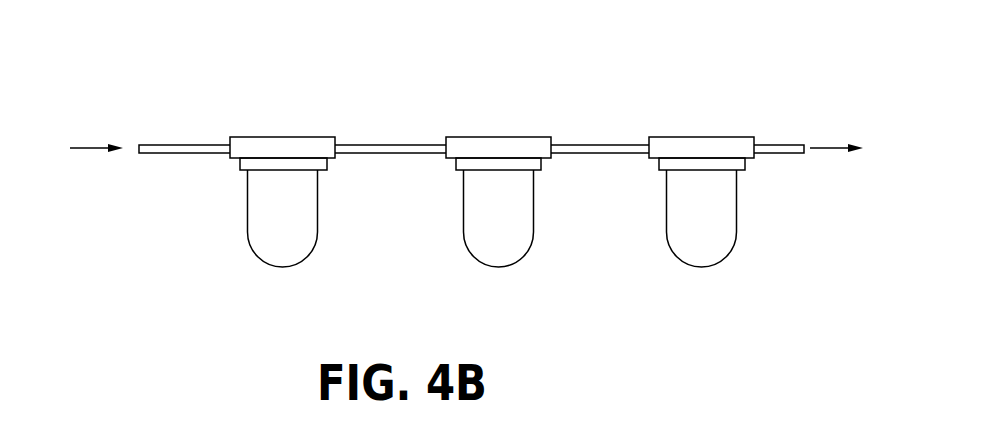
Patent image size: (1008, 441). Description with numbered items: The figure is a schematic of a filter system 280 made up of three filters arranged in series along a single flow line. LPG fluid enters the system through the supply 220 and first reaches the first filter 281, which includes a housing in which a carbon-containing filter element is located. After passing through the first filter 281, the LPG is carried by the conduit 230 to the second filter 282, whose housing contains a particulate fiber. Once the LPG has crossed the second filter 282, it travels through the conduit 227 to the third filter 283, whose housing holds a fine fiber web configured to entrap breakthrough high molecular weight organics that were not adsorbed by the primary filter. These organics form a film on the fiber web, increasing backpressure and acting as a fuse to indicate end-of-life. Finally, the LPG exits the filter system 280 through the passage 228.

The filter system 280 is at (539, 82).
The supply 220 is at (168, 153).
The conduit 230 is at (406, 153).
The conduit 227 is at (560, 153).
The passage 228 is at (785, 153).
The first filter 281 is at (277, 267).
The second filter 282 is at (493, 267).
The third filter 283 is at (695, 267).